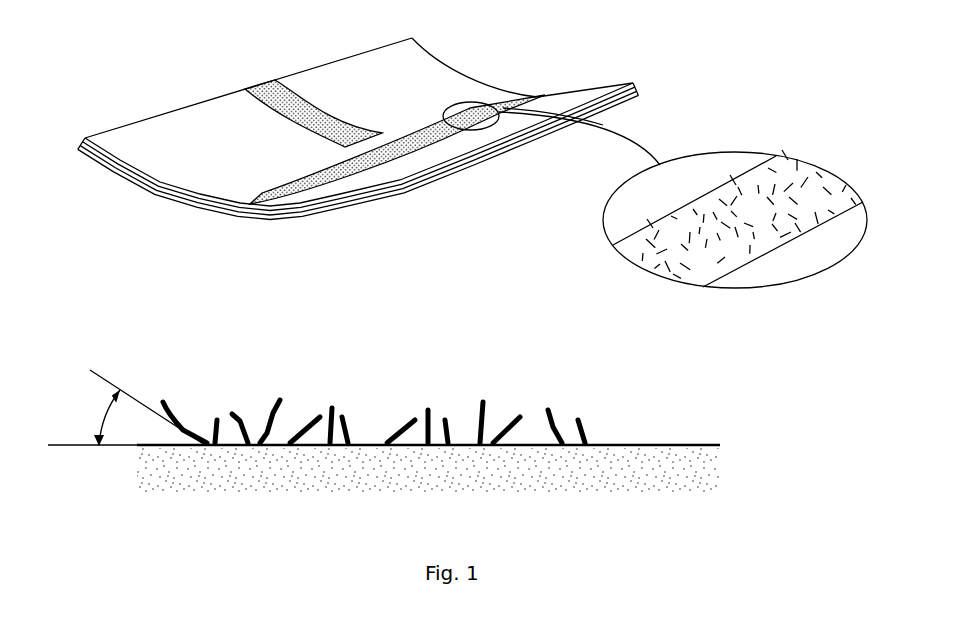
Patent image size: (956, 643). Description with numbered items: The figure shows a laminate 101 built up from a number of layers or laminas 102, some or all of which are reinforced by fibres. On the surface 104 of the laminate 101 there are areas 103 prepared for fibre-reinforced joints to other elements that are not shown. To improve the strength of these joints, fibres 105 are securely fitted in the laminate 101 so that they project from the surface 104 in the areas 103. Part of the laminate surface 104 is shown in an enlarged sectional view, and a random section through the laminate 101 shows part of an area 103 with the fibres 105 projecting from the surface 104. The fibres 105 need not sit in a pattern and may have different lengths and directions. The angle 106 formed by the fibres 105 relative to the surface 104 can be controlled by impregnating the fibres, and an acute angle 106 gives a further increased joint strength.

The laminate 101 is at (127, 126).
The layers or laminas 102 is at (357, 205).
The areas 103 is at (267, 82).
The surface 104 is at (197, 123).
The fibres 105 is at (412, 347).
The angle 106 is at (112, 408).